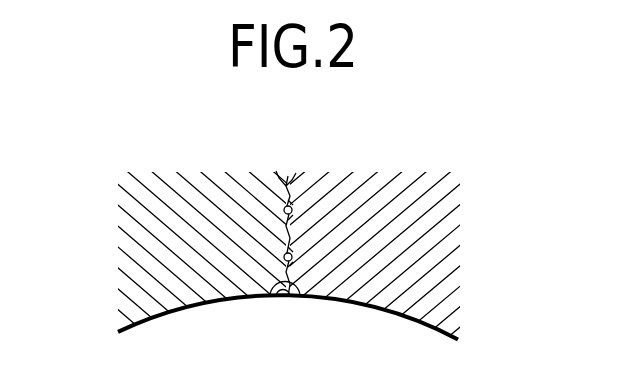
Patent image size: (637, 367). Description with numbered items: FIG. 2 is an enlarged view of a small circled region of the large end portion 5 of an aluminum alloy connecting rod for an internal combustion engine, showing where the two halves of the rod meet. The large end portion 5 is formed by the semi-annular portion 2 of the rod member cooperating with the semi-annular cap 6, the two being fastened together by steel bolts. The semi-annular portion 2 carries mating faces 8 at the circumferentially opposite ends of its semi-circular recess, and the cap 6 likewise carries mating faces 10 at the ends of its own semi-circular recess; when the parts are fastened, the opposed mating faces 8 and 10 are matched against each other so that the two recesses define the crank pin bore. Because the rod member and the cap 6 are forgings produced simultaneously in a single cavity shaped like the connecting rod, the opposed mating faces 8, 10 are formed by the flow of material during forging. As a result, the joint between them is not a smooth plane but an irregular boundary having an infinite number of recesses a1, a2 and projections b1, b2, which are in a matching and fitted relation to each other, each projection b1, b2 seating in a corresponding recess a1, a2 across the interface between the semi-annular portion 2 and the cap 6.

The semi-annular portion 2 is at (424, 262).
The large end portion 5 is at (318, 222).
The semi-annular cap 6 is at (140, 263).
The mating faces 8 is at (263, 298).
The mating faces 10 is at (308, 298).
The recess a1 is at (294, 260).
The projection b1 is at (283, 258).
The recess a2 is at (283, 210).
The projection b2 is at (294, 210).